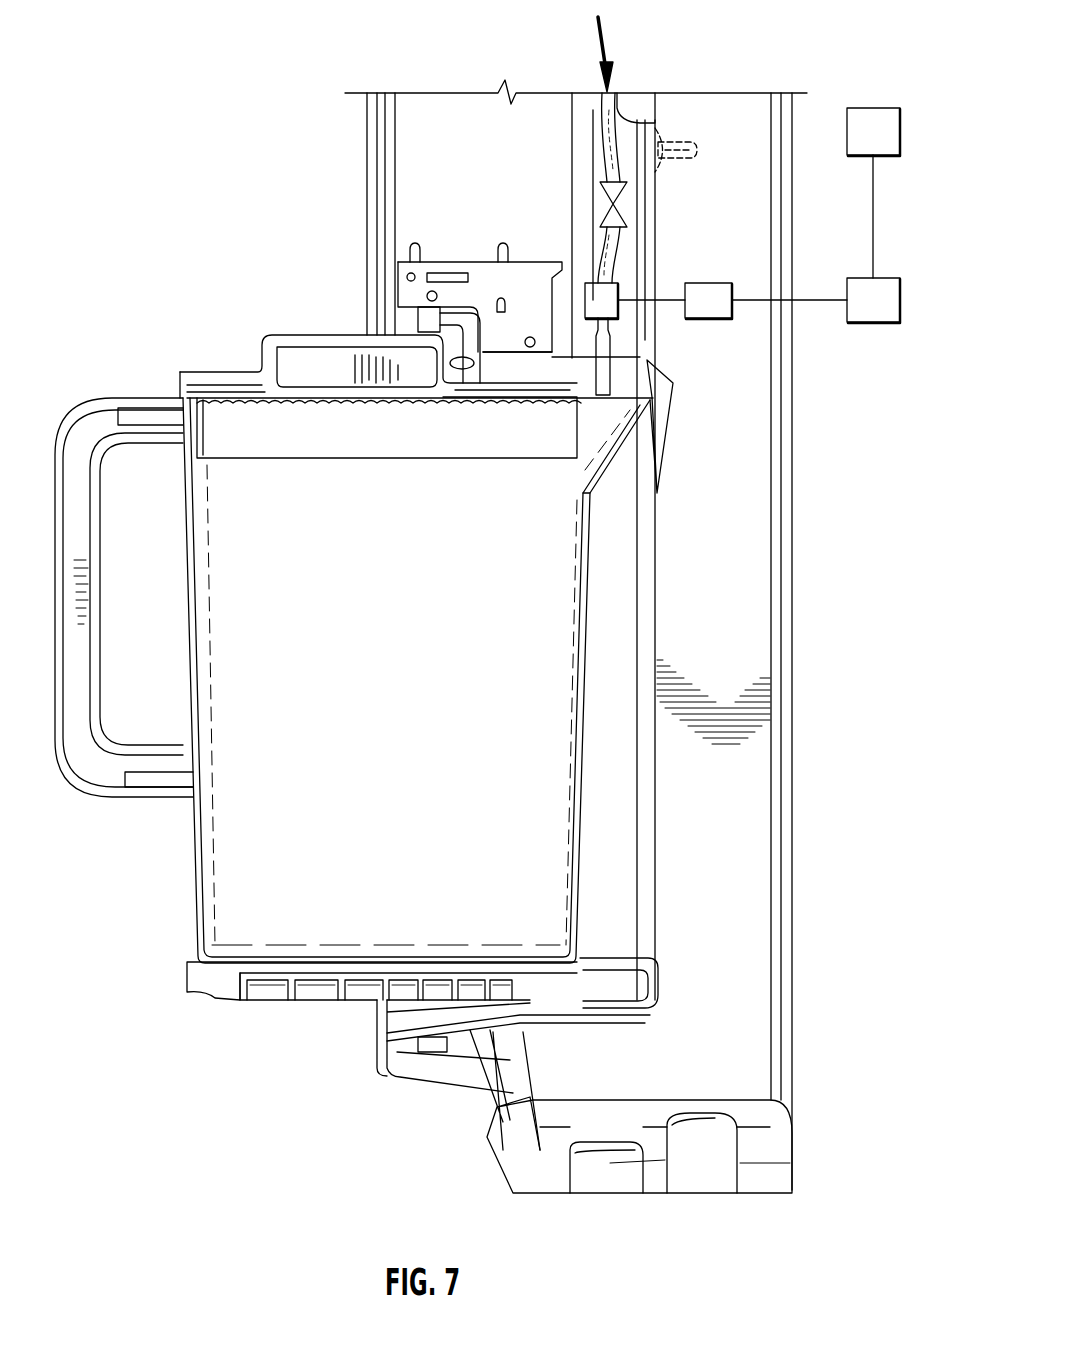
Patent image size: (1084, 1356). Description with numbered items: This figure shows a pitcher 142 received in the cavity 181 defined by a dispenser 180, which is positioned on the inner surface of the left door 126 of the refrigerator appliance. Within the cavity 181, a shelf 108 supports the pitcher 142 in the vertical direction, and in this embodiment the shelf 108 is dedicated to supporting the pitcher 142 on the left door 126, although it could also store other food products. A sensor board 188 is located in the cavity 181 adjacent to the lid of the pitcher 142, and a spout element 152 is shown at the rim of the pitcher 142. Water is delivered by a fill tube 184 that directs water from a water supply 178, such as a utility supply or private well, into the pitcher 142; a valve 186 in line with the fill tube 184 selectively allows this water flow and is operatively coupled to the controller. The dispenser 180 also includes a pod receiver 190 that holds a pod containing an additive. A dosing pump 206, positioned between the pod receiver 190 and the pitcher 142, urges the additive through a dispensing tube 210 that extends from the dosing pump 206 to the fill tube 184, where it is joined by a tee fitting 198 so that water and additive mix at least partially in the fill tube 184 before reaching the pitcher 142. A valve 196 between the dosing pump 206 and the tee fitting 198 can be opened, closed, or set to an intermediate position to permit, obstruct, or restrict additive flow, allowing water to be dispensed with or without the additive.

The shelf 108 is at (220, 995).
The left door 126 is at (775, 878).
The pitcher 142 is at (173, 373).
The spout flap 152 is at (645, 417).
The water supply 178 is at (600, 47).
The dispenser 180 is at (347, 251).
The cavity 181 is at (603, 648).
The fill tube 184 is at (617, 110).
The valve 186 is at (605, 190).
The sensor board 188 is at (463, 293).
The pod receiver 190 is at (872, 108).
The valve 196 is at (707, 285).
The tee fitting 198 is at (612, 305).
The dosing pump 206 is at (867, 323).
The dispensing tube 210 is at (876, 224).